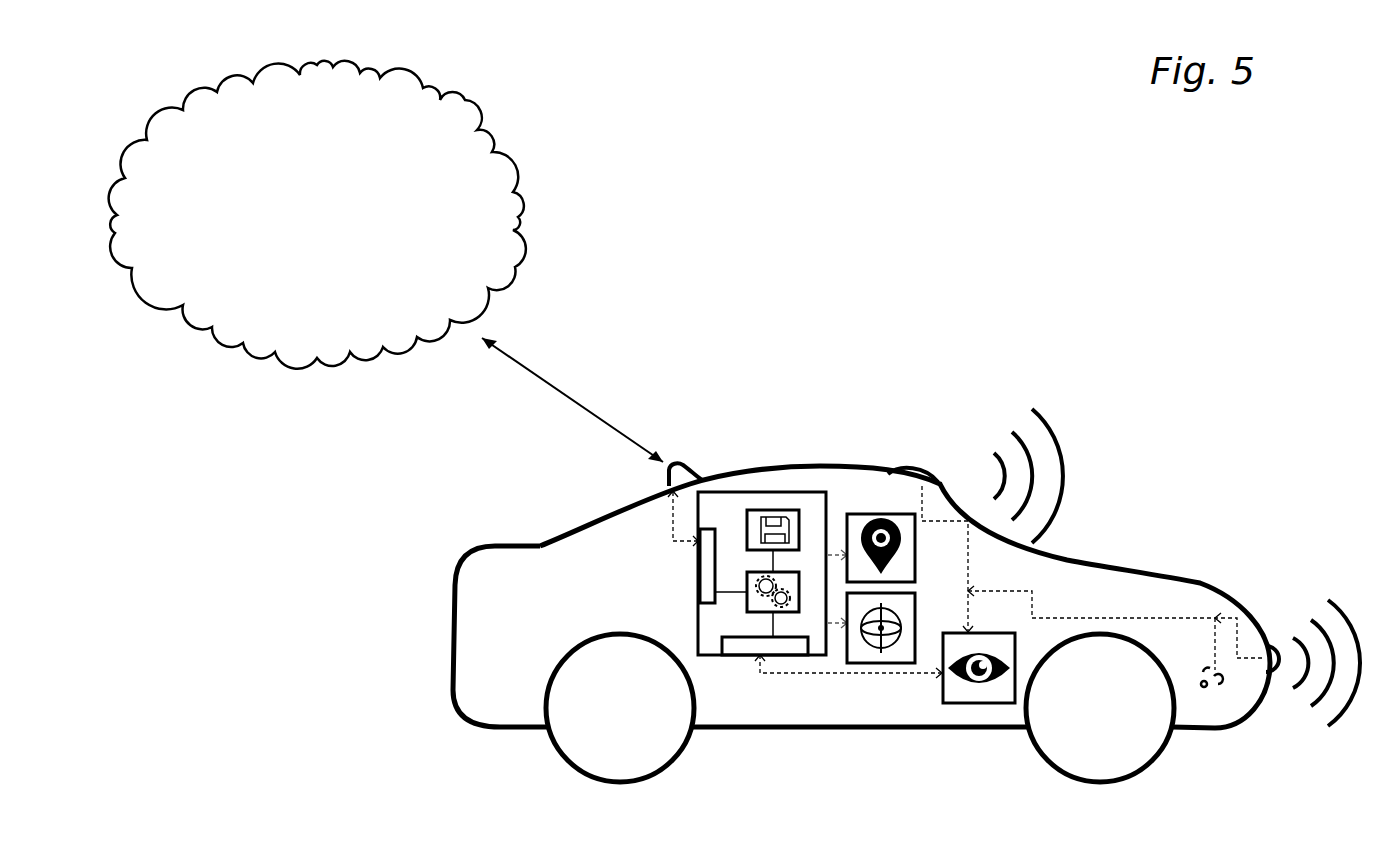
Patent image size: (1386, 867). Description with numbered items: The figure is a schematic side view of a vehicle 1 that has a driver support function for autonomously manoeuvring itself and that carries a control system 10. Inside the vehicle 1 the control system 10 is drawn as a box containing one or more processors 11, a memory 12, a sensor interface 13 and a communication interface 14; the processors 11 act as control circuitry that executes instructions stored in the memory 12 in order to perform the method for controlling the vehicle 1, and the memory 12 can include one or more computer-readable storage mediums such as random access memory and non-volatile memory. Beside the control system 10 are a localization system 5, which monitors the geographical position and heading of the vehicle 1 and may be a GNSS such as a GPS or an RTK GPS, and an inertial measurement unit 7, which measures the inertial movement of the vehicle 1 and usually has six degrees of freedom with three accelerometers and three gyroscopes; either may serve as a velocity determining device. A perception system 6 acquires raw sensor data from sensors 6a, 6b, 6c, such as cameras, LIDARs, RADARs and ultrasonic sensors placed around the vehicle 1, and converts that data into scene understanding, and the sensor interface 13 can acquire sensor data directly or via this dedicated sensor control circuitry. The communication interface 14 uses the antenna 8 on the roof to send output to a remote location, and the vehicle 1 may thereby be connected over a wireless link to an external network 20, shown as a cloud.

The vehicle 1 is at (472, 740).
The localization system 5 is at (862, 514).
The perception system 6 is at (988, 704).
The sensor 6a is at (1218, 686).
The sensor 6b is at (1270, 650).
The sensor 6c is at (910, 470).
The inertial measurement unit 7 is at (866, 664).
The antenna 8 is at (680, 466).
The control system 10 is at (752, 492).
The processor 11 is at (799, 600).
The memory 12 is at (770, 510).
The sensor interface 13 is at (738, 655).
The communication interface 14 is at (700, 578).
The external network 20 is at (466, 100).